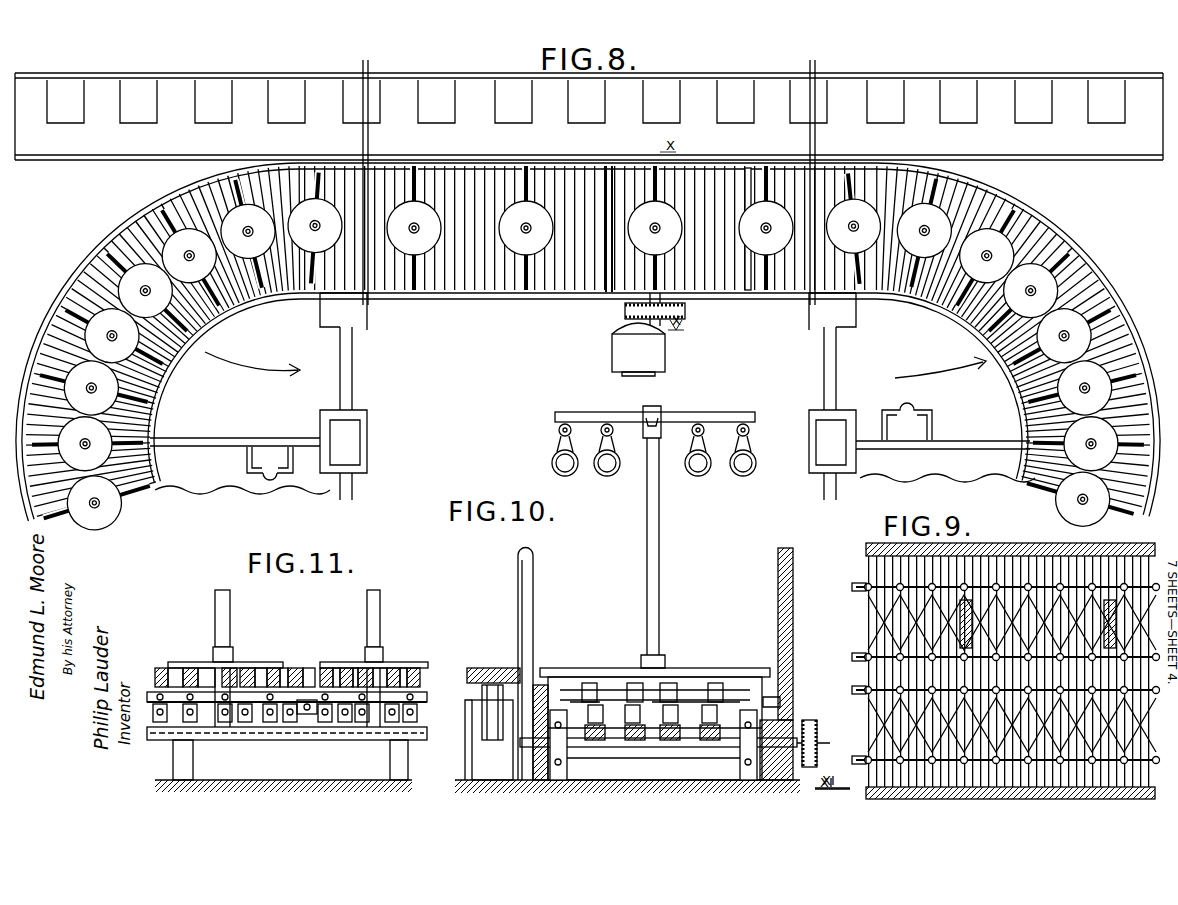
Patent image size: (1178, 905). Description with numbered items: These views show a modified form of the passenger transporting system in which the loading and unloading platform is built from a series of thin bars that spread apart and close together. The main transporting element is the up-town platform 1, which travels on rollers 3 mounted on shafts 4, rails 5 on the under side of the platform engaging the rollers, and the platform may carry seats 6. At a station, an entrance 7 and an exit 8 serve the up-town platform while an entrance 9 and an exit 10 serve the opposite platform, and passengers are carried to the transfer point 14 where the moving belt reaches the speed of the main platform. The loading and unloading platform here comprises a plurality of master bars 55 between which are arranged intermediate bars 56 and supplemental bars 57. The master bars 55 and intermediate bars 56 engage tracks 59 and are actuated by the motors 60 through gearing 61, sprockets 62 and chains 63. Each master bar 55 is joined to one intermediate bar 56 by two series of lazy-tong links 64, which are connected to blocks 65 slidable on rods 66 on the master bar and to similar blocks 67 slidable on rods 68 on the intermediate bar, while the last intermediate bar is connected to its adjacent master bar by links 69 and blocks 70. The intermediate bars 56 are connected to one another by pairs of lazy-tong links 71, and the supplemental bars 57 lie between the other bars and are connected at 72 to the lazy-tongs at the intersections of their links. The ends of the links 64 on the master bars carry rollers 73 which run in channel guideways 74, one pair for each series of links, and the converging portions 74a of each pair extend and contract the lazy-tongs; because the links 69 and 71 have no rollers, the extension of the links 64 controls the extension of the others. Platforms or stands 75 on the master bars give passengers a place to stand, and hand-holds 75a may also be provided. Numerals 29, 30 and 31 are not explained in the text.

In FIG. 8, the up-town platform 1 is at (108, 86).
In FIG. 10, the up-town platform 1 is at (471, 665).
In FIG. 10, the rollers 3 is at (488, 706).
In FIG. 10, the shafts 4 is at (472, 736).
In FIG. 10, the rails 5 is at (492, 683).
In FIG. 8, the seats 6 is at (214, 93).
In FIG. 8, the entrance 7 is at (940, 361).
In FIG. 8, the exit 8 is at (239, 373).
In FIG. 8, the entrance 9 is at (258, 396).
In FIG. 8, the exit 10 is at (922, 396).
In FIG. 8, the transfer point 14 is at (577, 162).
In FIG. 10, the transfer point 14 is at (528, 665).
In FIG. 10, the upright post 29 is at (518, 602).
In FIG. 8, the track rail 30 is at (90, 162).
In FIG. 10, the post cap 31 is at (517, 553).
In FIG. 8, the master bars 55 is at (428, 147).
In FIG. 10, the master bars 55 is at (600, 666).
In FIG. 11, the master bars 55 is at (215, 662).
In FIG. 9, the master bars 55 is at (995, 552).
In FIG. 8, the intermediate bars 56 is at (400, 166).
In FIG. 11, the intermediate bars 56 is at (260, 665).
In FIG. 9, the intermediate bars 56 is at (868, 556).
In FIG. 8, the supplemental bars 57 is at (418, 164).
In FIG. 11, the supplemental bars 57 is at (250, 665).
In FIG. 9, the supplemental bars 57 is at (880, 542).
In FIG. 10, the tracks 59 is at (540, 740).
In FIG. 8, the motors 60 is at (612, 352).
In FIG. 8, the gearing 61 is at (628, 312).
In FIG. 10, the gearing 61 is at (822, 736).
In FIG. 9, the gearing 61 is at (868, 760).
In FIG. 10, the sprockets 62 is at (568, 742).
In FIG. 8, the chains 63 is at (614, 165).
In FIG. 10, the chains 63 is at (592, 742).
In FIG. 10, the lazy-tong links 64 is at (594, 722).
In FIG. 11, the lazy-tong links 64 is at (180, 740).
In FIG. 9, the lazy-tong links 64 is at (940, 570).
In FIG. 11, the blocks 65 is at (408, 742).
In FIG. 10, the rods 66 is at (655, 668).
In FIG. 11, the rods 66 is at (400, 742).
In FIG. 11, the blocks 67 is at (320, 730).
In FIG. 11, the rods 68 is at (322, 714).
In FIG. 10, the links 69 is at (612, 700).
In FIG. 11, the links 69 is at (235, 724).
In FIG. 10, the blocks 70 is at (605, 652).
In FIG. 11, the blocks 70 is at (200, 666).
In FIG. 8, the lazy-tong links 71 is at (598, 165).
In FIG. 11, the lazy-tong links 71 is at (292, 702).
In FIG. 9, the lazy-tong links 71 is at (870, 590).
In FIG. 11, the connection 72 is at (278, 702).
In FIG. 10, the rollers 73 is at (720, 728).
In FIG. 11, the rollers 73 is at (210, 724).
In FIG. 10, the channel guideways 74 is at (562, 700).
In FIG. 11, the channel guideways 74 is at (427, 733).
In FIG. 8, the converging portions 74a is at (752, 190).
In FIG. 9, the converging portions 74a is at (856, 656).
In FIG. 8, the platforms or stands 75 is at (780, 170).
In FIG. 10, the platforms or stands 75 is at (700, 668).
In FIG. 11, the platforms or stands 75 is at (207, 660).
In FIG. 9, the platforms or stands 75 is at (1100, 558).
In FIG. 10, the hand-holds 75a is at (582, 472).